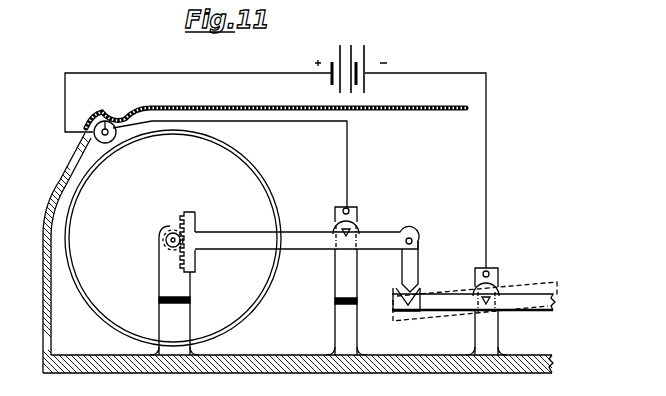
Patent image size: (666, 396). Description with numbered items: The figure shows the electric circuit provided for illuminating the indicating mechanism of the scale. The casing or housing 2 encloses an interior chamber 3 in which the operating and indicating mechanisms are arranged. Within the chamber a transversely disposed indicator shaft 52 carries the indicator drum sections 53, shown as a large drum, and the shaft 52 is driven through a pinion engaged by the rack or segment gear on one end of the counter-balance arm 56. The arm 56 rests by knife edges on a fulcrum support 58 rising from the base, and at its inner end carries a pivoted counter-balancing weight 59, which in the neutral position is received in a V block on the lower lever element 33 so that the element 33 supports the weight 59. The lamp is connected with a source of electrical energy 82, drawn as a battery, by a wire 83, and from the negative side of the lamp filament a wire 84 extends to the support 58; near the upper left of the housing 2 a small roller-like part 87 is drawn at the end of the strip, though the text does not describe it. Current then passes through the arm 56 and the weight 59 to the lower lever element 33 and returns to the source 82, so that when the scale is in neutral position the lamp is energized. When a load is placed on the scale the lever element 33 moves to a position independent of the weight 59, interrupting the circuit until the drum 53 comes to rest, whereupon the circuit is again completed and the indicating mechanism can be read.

The housing 2 is at (52, 196).
The interior chamber 3 is at (425, 170).
The lever element 33 is at (547, 312).
The indicator shaft 52 is at (165, 233).
The indicator drum sections 53 is at (273, 191).
The counter-balance arm 56 is at (307, 251).
The fulcrum support 58 is at (360, 213).
The counter-balancing weight 59 is at (418, 271).
The source of electrical energy 82 is at (356, 63).
The wire 83 is at (190, 73).
The wire 84 is at (275, 128).
The contact roller 87 is at (108, 119).